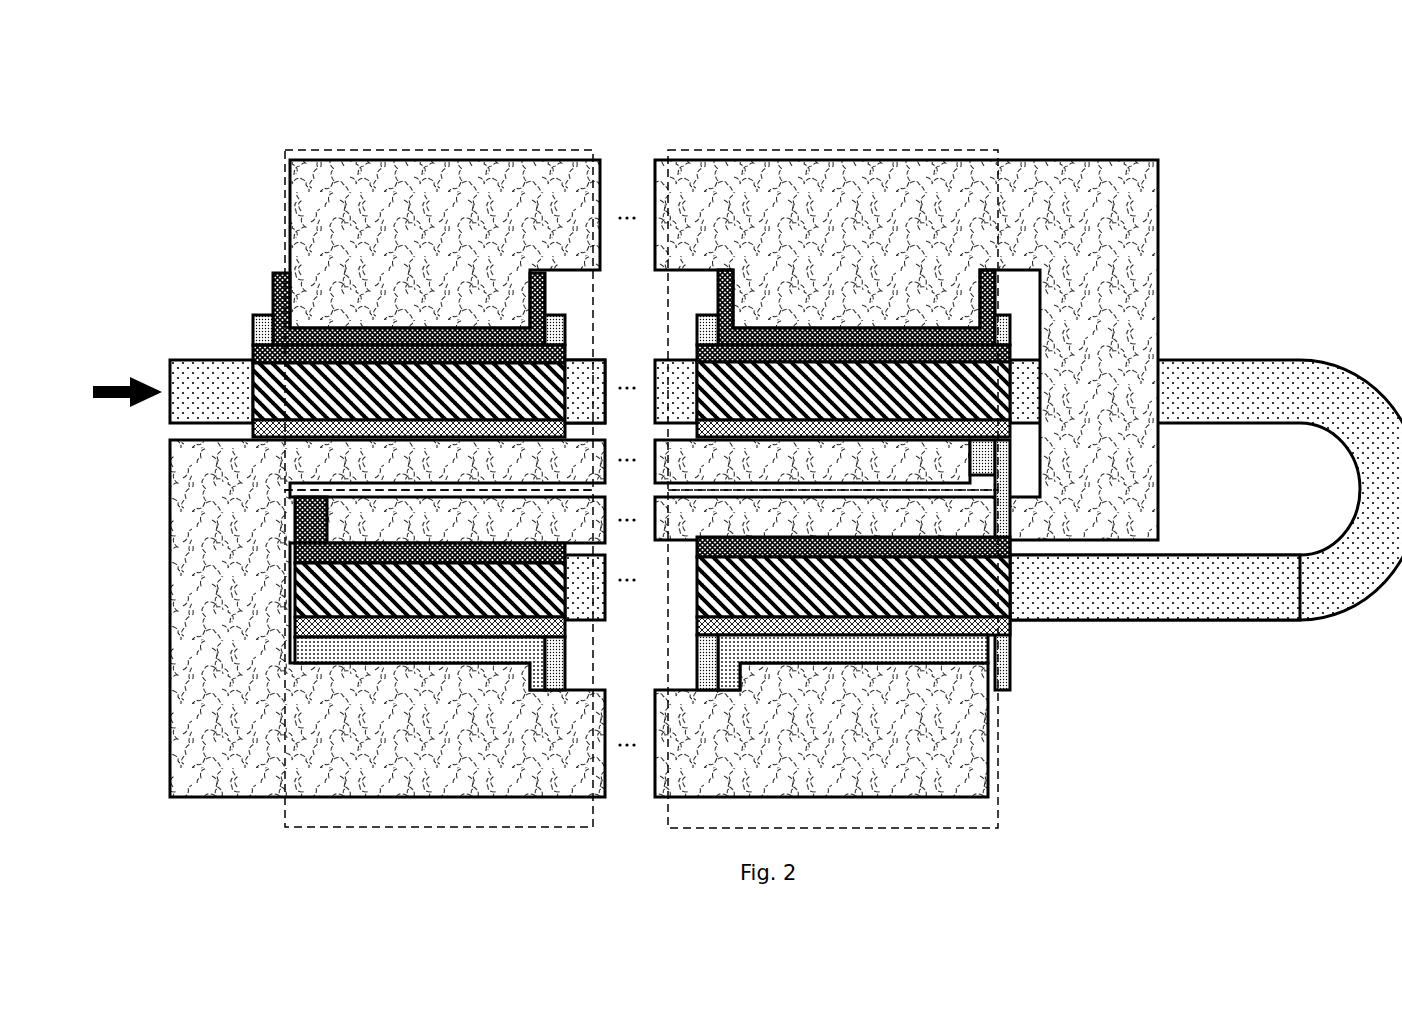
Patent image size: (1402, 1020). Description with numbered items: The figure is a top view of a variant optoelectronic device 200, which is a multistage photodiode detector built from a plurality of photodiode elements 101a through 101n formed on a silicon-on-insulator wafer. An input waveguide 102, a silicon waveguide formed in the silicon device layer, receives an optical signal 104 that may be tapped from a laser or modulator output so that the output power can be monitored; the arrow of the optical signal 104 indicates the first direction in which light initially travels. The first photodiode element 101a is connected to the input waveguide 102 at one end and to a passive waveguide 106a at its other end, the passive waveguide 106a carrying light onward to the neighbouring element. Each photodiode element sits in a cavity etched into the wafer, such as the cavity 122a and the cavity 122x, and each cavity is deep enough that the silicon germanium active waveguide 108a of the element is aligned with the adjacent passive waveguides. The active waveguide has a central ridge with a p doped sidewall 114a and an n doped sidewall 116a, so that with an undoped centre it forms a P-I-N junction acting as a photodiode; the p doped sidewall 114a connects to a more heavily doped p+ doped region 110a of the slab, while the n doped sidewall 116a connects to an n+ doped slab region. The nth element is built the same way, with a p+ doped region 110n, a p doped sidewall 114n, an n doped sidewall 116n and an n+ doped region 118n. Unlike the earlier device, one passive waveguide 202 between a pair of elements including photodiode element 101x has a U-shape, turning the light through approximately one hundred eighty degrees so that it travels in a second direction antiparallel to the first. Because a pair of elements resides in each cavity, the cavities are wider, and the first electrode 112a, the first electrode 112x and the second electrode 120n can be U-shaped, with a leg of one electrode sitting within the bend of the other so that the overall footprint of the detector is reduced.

The optoelectronic device 200 is at (176, 161).
The photodiode element 101a is at (285, 178).
The photodiode element 101n is at (285, 828).
The photodiode element 101x is at (672, 163).
The input waveguide 102 is at (223, 360).
The optical signal 104 is at (105, 392).
The passive waveguide 106a is at (583, 360).
The active waveguide 108a is at (357, 385).
The p+ doped region 110a is at (382, 338).
The p+ doped region 110n is at (297, 522).
The first electrode 112a is at (463, 215).
The first electrode 112x is at (795, 195).
The p doped sidewall 114a is at (295, 355).
The p doped sidewall 114n is at (297, 560).
The n doped sidewall 116a is at (257, 427).
The n doped sidewall 116n is at (297, 627).
The n+ doped region 118n is at (327, 653).
The second electrode 120n is at (420, 737).
The cavity 122a is at (558, 690).
The cavity 122x is at (997, 690).
The passive waveguide 202 is at (1175, 593).